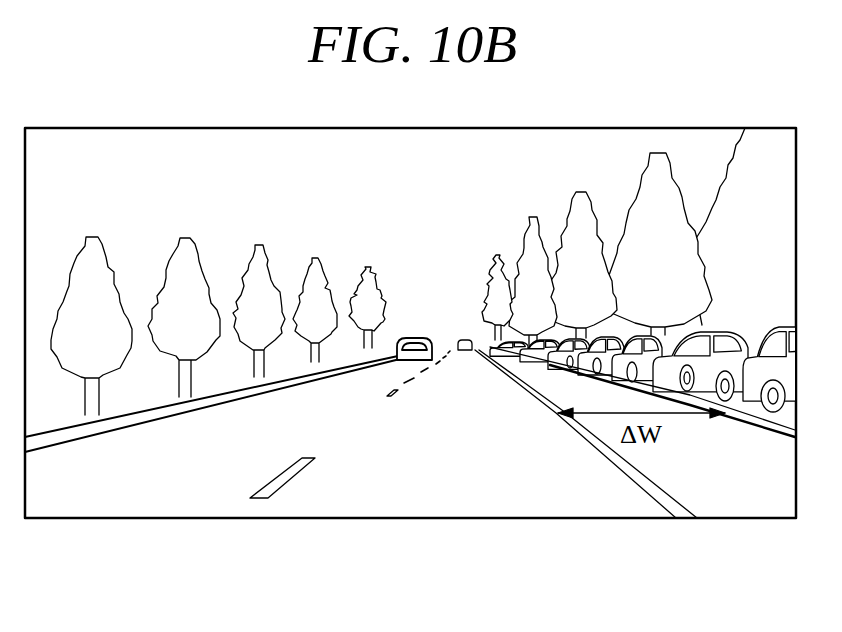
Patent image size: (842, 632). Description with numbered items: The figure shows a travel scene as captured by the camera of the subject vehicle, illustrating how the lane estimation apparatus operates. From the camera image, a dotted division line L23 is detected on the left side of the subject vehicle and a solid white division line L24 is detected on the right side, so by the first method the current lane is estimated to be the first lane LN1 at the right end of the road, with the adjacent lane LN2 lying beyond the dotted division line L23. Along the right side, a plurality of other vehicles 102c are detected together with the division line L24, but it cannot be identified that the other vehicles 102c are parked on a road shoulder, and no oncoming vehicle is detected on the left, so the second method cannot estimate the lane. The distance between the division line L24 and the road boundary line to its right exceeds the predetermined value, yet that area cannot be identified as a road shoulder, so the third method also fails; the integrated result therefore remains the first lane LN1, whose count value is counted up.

The other vehicles 102c is at (723, 327).
The first lane LN1 is at (510, 487).
The second lane (adjacent lane) LN2 is at (148, 492).
The dotted division line L23 is at (305, 468).
The division line L24 is at (632, 482).